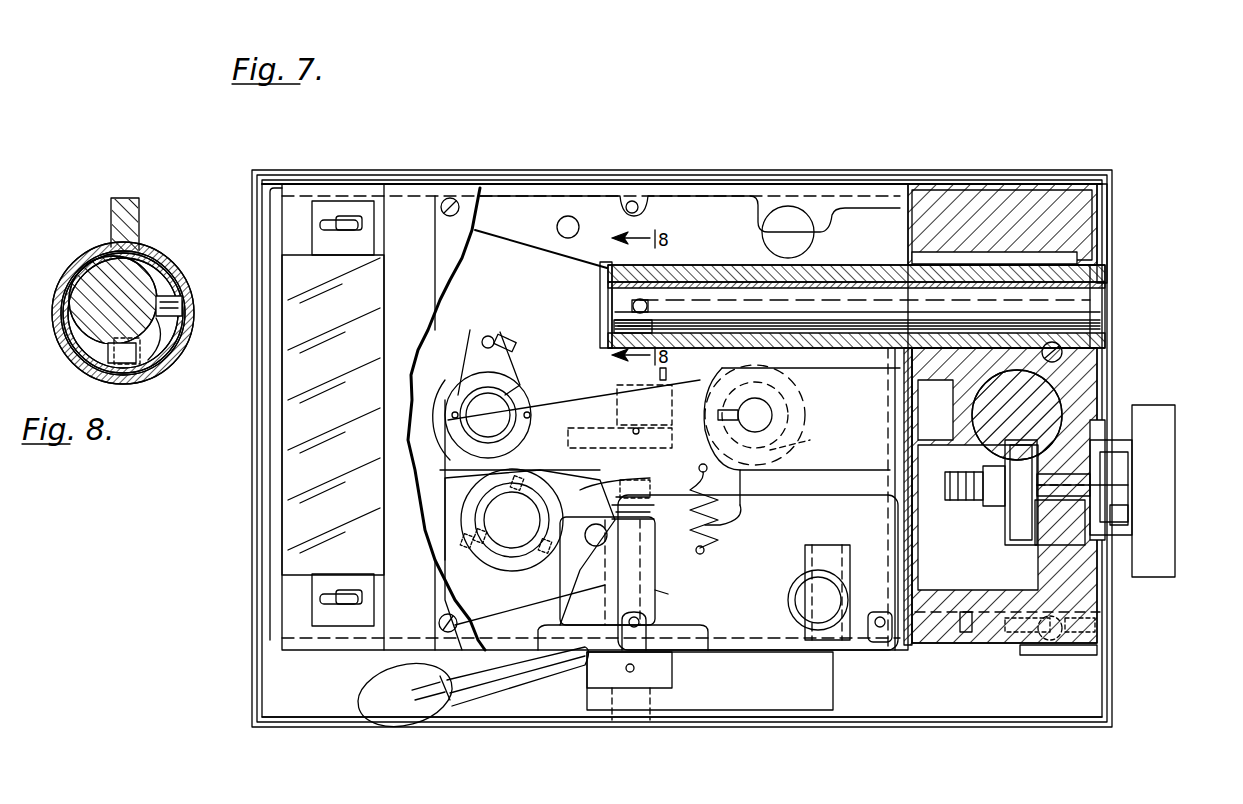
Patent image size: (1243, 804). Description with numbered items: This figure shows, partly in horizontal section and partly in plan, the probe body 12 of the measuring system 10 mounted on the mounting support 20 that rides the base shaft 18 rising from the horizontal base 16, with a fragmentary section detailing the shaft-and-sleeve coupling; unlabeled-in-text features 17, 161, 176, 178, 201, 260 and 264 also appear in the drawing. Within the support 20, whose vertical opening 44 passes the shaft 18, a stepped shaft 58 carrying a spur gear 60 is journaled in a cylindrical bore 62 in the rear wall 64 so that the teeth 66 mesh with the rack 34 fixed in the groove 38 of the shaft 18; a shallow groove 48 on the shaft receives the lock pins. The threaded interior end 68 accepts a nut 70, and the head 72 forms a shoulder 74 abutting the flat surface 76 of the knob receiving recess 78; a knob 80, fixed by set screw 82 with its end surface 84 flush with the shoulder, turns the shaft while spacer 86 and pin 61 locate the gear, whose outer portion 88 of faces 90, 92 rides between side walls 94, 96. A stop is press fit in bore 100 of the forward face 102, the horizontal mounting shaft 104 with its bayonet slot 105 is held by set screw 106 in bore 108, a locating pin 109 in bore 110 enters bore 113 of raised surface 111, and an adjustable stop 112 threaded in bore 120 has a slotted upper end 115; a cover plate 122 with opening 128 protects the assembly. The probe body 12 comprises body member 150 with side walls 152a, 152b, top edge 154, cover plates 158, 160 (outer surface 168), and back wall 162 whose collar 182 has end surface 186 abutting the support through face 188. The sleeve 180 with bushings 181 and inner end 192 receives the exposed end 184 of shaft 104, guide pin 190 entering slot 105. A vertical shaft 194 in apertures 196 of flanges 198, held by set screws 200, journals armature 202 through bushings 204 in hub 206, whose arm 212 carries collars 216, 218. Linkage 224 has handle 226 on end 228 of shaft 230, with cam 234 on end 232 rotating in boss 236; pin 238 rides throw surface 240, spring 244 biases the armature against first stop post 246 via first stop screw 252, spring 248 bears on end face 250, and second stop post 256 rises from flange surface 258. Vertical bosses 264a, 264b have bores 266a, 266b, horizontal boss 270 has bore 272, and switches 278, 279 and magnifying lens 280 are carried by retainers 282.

In FIG. 7, the measuring system 10 is at (1118, 132).
In FIG. 7, the probe body 12 is at (320, 652).
In FIG. 7, the horizontal base 16 is at (252, 668).
In FIG. 7, the housing wall 17 is at (1112, 703).
In FIG. 7, the base shaft 18 is at (1100, 380).
In FIG. 7, the mounting support 20 is at (1112, 212).
In FIG. 7, the rack 34 is at (1100, 425).
In FIG. 7, the groove 38 is at (960, 462).
In FIG. 7, the vertical opening 44 is at (1169, 352).
In FIG. 7, the shallow groove 48 is at (926, 426).
In FIG. 7, the stepped shaft 58 is at (1056, 545).
In FIG. 7, the spur gear 60 is at (1008, 518).
In FIG. 7, the pin 61 is at (1028, 552).
In FIG. 7, the cylindrical bore 62 is at (1080, 520).
In FIG. 7, the rear wall 64 is at (1107, 602).
In FIG. 7, the teeth 66 is at (1018, 550).
In FIG. 7, the interior end 68 is at (960, 500).
In FIG. 7, the nut 70 is at (985, 505).
In FIG. 7, the head 72 is at (1125, 472).
In FIG. 7, the shoulder 74 is at (1125, 488).
In FIG. 7, the flat surface 76 is at (1125, 458).
In FIG. 7, the knob receiving recess 78 is at (1100, 445).
In FIG. 7, the knob 80 is at (1175, 410).
In FIG. 7, the set screw 82 is at (1125, 518).
In FIG. 7, the end surface 84 is at (1090, 552).
In FIG. 7, the spacer 86 is at (1000, 515).
In FIG. 7, the outer portion 88 is at (1038, 540).
In FIG. 7, the face 90 is at (1012, 530).
In FIG. 7, the face 92 is at (1055, 520).
In FIG. 7, the side wall 94 is at (926, 398).
In FIG. 7, the side wall 96 is at (1075, 395).
In FIG. 7, the cylindrical bore 100 is at (950, 648).
In FIG. 7, the forward face 102 is at (906, 655).
In FIG. 7, the horizontal mounting shaft 104 is at (1107, 300).
In FIG. 8, the horizontal mounting shaft 104 is at (146, 260).
In FIG. 7, the bayonet slot 105 is at (618, 335).
In FIG. 8, the bayonet slot 105 is at (163, 342).
In FIG. 7, the set screw 106 is at (1000, 310).
In FIG. 7, the cylindrical bore 108 is at (1090, 284).
In FIG. 7, the locating pin 109 is at (1045, 648).
In FIG. 7, the cylindrical bore 110 is at (1015, 645).
In FIG. 7, the raised surface 111 is at (1107, 654).
In FIG. 7, the adjustable stop 112 is at (1100, 336).
In FIG. 7, the cylindrical bore 113 is at (1085, 640).
In FIG. 7, the slotted upper end 115 is at (1100, 358).
In FIG. 7, the vertical cylindrical bore 120 is at (1174, 330).
In FIG. 7, the cover plate 122 is at (905, 484).
In FIG. 7, the opening 128 is at (938, 265).
In FIG. 7, the body member 150 is at (834, 414).
In FIG. 7, the side wall 152a is at (688, 196).
In FIG. 7, the side wall 152b is at (720, 652).
In FIG. 7, the top edge 154 is at (600, 196).
In FIG. 7, the top cover plate 158 is at (460, 258).
In FIG. 7, the bottom cover plate 160 is at (778, 375).
In FIG. 7, the hole 161 is at (678, 268).
In FIG. 7, the back wall 162 is at (895, 512).
In FIG. 7, the outer surface 168 is at (476, 216).
In FIG. 7, the tab 176 is at (885, 652).
In FIG. 7, the lug 178 is at (878, 612).
In FIG. 8, the cylindrical sleeve portion 180 is at (70, 362).
In FIG. 8, the bronze bushing 181 is at (68, 286).
In FIG. 7, the collar portion 182 is at (890, 284).
In FIG. 7, the exposed end 184 is at (750, 282).
In FIG. 7, the end surface 186 is at (905, 380).
In FIG. 7, the face 188 is at (857, 374).
In FIG. 7, the guide pin 190 is at (625, 305).
In FIG. 8, the guide pin 190 is at (180, 306).
In FIG. 7, the inner end 192 is at (622, 385).
In FIG. 8, the inner end 192 is at (73, 255).
In FIG. 7, the vertical shaft 194 is at (768, 440).
In FIG. 7, the aperture 196 is at (755, 400).
In FIG. 7, the flange 198 is at (753, 512).
In FIG. 7, the set screw 200 is at (718, 428).
In FIG. 7, the bore 201 is at (990, 265).
In FIG. 7, the armature 202 is at (712, 405).
In FIG. 7, the bushing 204 is at (792, 505).
In FIG. 7, the hub portion 206 is at (808, 440).
In FIG. 7, the instrument holder arm 212 is at (565, 398).
In FIG. 7, the holding collar 216 is at (455, 395).
In FIG. 7, the holding collar 218 is at (493, 592).
In FIG. 7, the linkage 224 is at (560, 690).
In FIG. 7, the handle 226 is at (488, 700).
In FIG. 7, the end 228 is at (643, 740).
In FIG. 7, the shaft 230 is at (612, 715).
In FIG. 7, the other end 232 is at (700, 470).
In FIG. 7, the cam 234 is at (620, 420).
In FIG. 7, the cylindrical boss 236 is at (690, 612).
In FIG. 7, the pin 238 is at (644, 428).
In FIG. 7, the throw surface 240 is at (580, 424).
In FIG. 7, the spring 244 is at (768, 518).
In FIG. 7, the first stop post 246 is at (596, 550).
In FIG. 7, the spring 248 is at (700, 548).
In FIG. 7, the end face 250 is at (615, 490).
In FIG. 7, the first stop screw 252 is at (511, 520).
In FIG. 7, the second stop post 256 is at (566, 218).
In FIG. 7, the flange surface 258 is at (536, 250).
In FIG. 7, the pivot pin 260 is at (492, 330).
In FIG. 7, the stop 264 is at (518, 333).
In FIG. 7, the vertical boss 264a is at (828, 284).
In FIG. 7, the vertical boss 264b is at (760, 585).
In FIG. 7, the cylindrical bore 266a is at (865, 298).
In FIG. 7, the cylindrical bore 266b is at (778, 598).
In FIG. 7, the horizontal boss 270 is at (855, 558).
In FIG. 7, the cylindrical bore 272 is at (828, 556).
In FIG. 7, the control switch 278 is at (312, 601).
In FIG. 7, the control switch 279 is at (343, 205).
In FIG. 7, the magnifying lens 280 is at (282, 455).
In FIG. 7, the retainer 282 is at (285, 233).
In FIG. 8, the retainer 282 is at (222, 232).